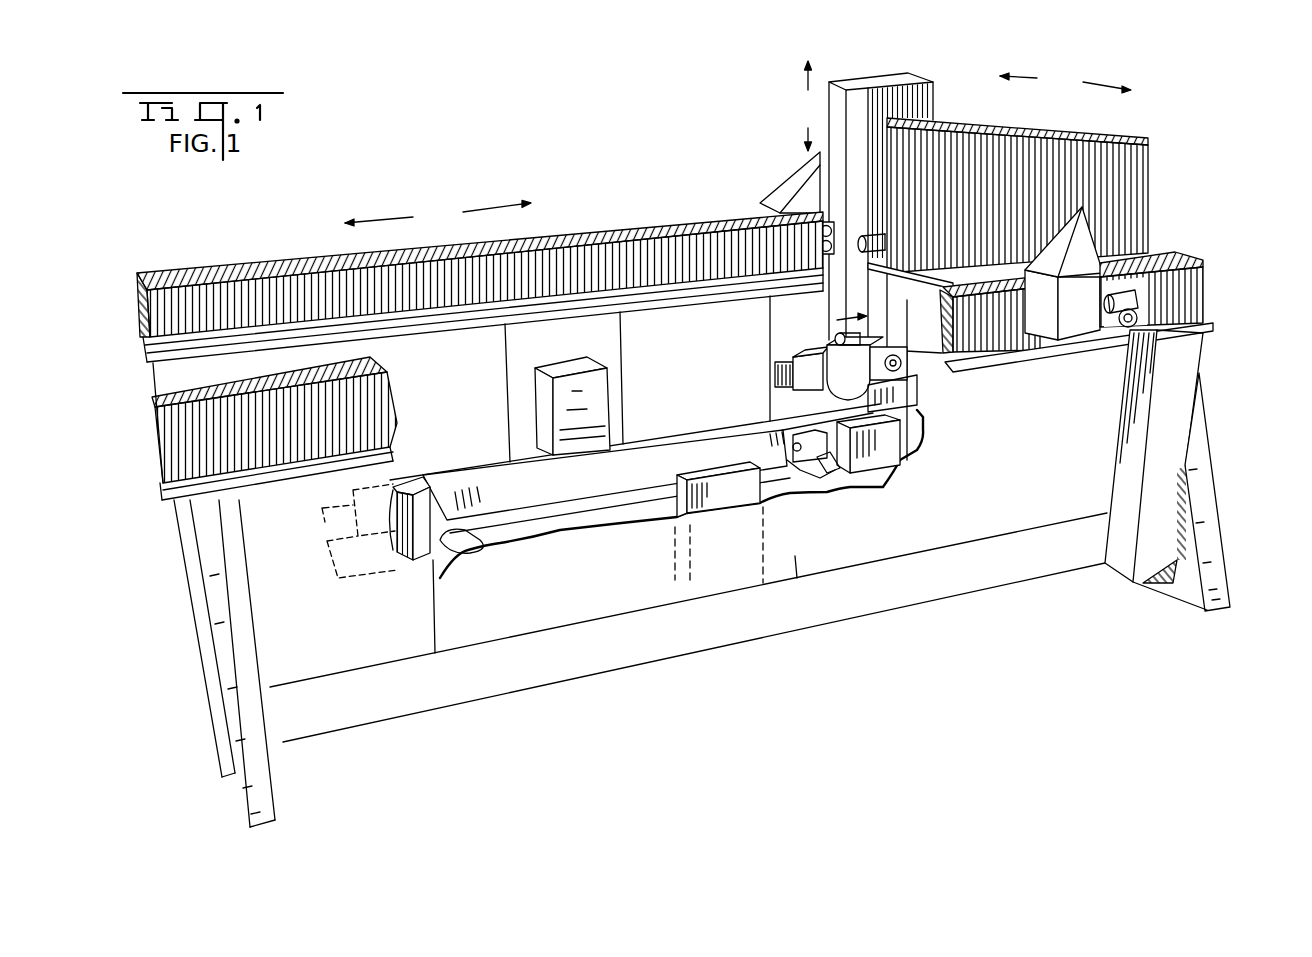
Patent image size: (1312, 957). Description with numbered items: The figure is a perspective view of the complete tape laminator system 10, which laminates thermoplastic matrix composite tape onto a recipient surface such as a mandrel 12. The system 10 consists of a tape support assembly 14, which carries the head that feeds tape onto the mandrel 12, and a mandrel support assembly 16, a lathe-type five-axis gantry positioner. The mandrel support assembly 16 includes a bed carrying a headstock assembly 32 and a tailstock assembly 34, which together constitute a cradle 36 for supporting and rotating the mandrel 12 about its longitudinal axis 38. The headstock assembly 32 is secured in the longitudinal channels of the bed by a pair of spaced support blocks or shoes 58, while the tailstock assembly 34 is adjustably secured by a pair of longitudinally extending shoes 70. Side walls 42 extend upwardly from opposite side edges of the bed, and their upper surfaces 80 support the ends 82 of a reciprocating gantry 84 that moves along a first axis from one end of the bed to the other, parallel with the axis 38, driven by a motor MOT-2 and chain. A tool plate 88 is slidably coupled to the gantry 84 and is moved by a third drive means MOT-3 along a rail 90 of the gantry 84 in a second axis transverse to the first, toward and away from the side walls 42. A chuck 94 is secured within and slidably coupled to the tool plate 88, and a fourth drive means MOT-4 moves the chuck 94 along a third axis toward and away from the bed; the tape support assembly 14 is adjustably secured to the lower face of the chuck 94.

The tape laminator system 10 is at (685, 424).
The mandrel 12 is at (637, 503).
The tape support assembly 14 is at (814, 348).
The mandrel support assembly 16 is at (1023, 583).
The headstock assembly 32 is at (847, 490).
The tailstock assembly 34 is at (432, 556).
The cradle 36 is at (497, 527).
The longitudinal axis 38 is at (566, 488).
The side walls 42 is at (493, 343).
The support blocks or shoes 58 is at (803, 500).
The shoes 70 is at (433, 560).
The upper surfaces 80 is at (152, 340).
The ends 82 is at (1143, 210).
The reciprocating gantry 84 is at (1120, 234).
The tool plate 88 is at (927, 92).
The rail 90 is at (950, 280).
The chuck 94 is at (835, 343).
The motor MOT-2 is at (1150, 300).
The third drive means MOT-3 is at (862, 232).
The fourth drive means MOT-4 is at (826, 218).